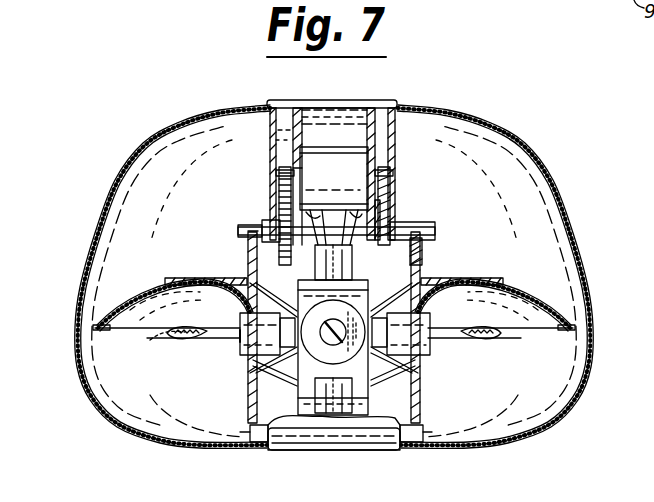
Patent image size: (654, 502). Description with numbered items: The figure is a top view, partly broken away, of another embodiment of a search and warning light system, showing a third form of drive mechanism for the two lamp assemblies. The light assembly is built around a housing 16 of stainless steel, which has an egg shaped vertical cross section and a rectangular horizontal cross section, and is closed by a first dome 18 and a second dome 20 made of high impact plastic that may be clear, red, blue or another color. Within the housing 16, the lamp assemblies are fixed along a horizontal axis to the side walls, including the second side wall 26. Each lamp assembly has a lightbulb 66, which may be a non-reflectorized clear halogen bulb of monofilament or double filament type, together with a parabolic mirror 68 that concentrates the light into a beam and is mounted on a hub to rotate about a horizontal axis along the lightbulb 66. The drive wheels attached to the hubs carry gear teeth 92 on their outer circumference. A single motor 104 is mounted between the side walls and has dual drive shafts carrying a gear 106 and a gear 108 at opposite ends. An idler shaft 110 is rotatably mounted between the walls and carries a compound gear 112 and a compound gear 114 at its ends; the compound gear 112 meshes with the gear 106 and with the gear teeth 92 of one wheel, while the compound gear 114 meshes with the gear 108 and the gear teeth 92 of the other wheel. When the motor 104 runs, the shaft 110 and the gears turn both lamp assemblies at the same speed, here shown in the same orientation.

The housing 16 is at (306, 100).
The first dome 18 is at (88, 248).
The second dome 20 is at (545, 165).
The second side wall 26 is at (376, 145).
The lightbulb 66 is at (182, 340).
The parabolic mirror 68 is at (115, 315).
The gear teeth 92 is at (418, 415).
The motor 104 is at (340, 152).
The gear 106 is at (279, 172).
The gear 108 is at (393, 164).
The idler shaft 110 is at (383, 215).
The compound gear 112 is at (272, 222).
The compound gear 114 is at (428, 255).